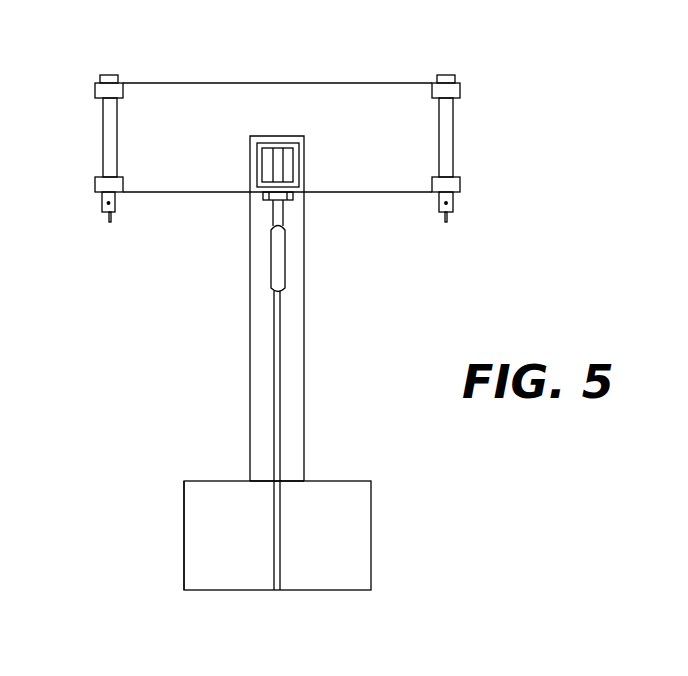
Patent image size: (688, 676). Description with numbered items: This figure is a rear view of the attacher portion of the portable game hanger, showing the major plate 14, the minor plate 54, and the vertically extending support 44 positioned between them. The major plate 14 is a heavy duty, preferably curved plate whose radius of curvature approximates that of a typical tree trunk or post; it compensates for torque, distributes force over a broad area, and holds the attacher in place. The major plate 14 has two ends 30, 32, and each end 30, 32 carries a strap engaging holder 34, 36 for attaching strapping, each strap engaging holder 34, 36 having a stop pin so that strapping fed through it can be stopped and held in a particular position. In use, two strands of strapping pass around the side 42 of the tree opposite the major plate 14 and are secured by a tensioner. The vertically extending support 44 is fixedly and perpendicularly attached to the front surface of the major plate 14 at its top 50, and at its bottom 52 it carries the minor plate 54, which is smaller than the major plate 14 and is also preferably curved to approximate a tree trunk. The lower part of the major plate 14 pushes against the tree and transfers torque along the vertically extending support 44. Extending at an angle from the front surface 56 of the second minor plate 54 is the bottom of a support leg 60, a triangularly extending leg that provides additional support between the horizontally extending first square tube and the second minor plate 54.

The major plate 14 is at (282, 83).
The end of the major plate 30 is at (432, 79).
The end of the major plate 32 is at (130, 83).
The strap engaging holder 34 is at (453, 137).
The strap engaging holder 36 is at (102, 138).
The side of the tree 42 is at (360, 192).
The vertically extending support 44 is at (304, 390).
The top of the vertically extending support 50 is at (250, 192).
The bottom of the vertically extending support 52 is at (305, 480).
The minor plate 54 is at (371, 533).
The front surface of the minor plate 56 is at (197, 530).
The support leg 60 is at (280, 345).